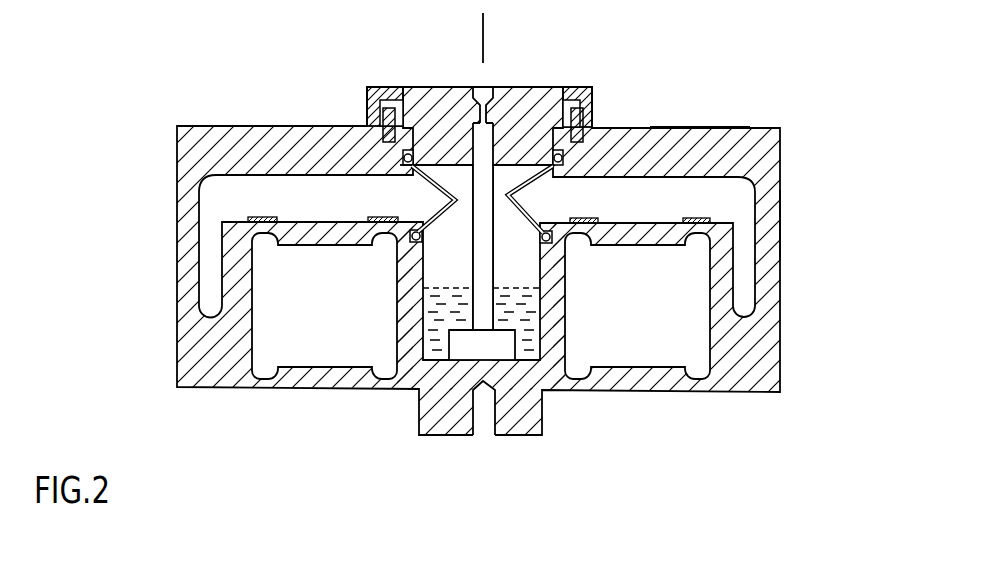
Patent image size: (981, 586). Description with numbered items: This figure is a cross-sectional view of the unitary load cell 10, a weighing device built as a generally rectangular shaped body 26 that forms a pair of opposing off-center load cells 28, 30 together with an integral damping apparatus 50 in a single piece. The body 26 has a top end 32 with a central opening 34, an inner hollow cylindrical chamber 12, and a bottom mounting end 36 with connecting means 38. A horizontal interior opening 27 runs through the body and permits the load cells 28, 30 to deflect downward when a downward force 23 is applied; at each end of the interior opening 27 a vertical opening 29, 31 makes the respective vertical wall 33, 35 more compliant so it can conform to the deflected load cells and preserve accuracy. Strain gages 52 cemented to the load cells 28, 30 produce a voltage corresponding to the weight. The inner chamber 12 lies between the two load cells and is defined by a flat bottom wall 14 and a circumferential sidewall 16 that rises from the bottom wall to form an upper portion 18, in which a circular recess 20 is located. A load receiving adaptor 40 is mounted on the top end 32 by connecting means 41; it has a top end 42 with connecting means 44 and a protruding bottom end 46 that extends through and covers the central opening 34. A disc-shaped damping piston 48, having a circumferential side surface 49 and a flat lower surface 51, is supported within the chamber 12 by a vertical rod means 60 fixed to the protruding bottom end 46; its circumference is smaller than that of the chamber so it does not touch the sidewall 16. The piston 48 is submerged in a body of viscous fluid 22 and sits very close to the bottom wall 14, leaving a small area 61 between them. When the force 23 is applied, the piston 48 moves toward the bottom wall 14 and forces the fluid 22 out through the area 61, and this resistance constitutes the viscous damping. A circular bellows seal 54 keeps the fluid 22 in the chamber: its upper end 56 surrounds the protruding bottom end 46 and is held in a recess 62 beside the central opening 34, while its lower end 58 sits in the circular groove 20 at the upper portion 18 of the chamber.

The unitary load cell 10 is at (784, 66).
The inner chamber 12 is at (526, 269).
The bottom wall 14 is at (527, 358).
The sidewall 16 is at (546, 278).
The upper portion 18 is at (336, 262).
The circular recess 20 is at (566, 222).
The viscous fluid 22 is at (430, 329).
The downward force 23 is at (488, 15).
The rectangular shaped body 26 is at (772, 163).
The horizontal interior opening 27 is at (668, 190).
The off-center load cell 28 is at (258, 329).
The vertical opening 29 is at (208, 283).
The off-center load cell 30 is at (702, 344).
The vertical opening 31 is at (748, 271).
The top end 32 is at (700, 127).
The vertical wall 33 is at (187, 207).
The central opening 34 is at (420, 137).
The vertical wall 35 is at (773, 223).
The bottom mounting end 36 is at (530, 436).
The connecting means 38 is at (488, 422).
The load receiving adaptor 40 is at (541, 76).
The connecting means 41 is at (577, 92).
The top end 42 is at (398, 87).
The connecting means 44 is at (488, 92).
The protruding bottom end 46 is at (537, 173).
The damping piston 48 is at (455, 348).
The circumferential side surface 49 is at (518, 343).
The integral damping apparatus 50 is at (366, 423).
The lower surface 51 is at (473, 420).
The strain gages 52 is at (700, 218).
The bellows seal 54 is at (520, 198).
The upper end 56 is at (400, 165).
The lower end 58 is at (565, 241).
The rod means 60 is at (472, 217).
The area 61 is at (521, 437).
The recess 62 is at (561, 159).